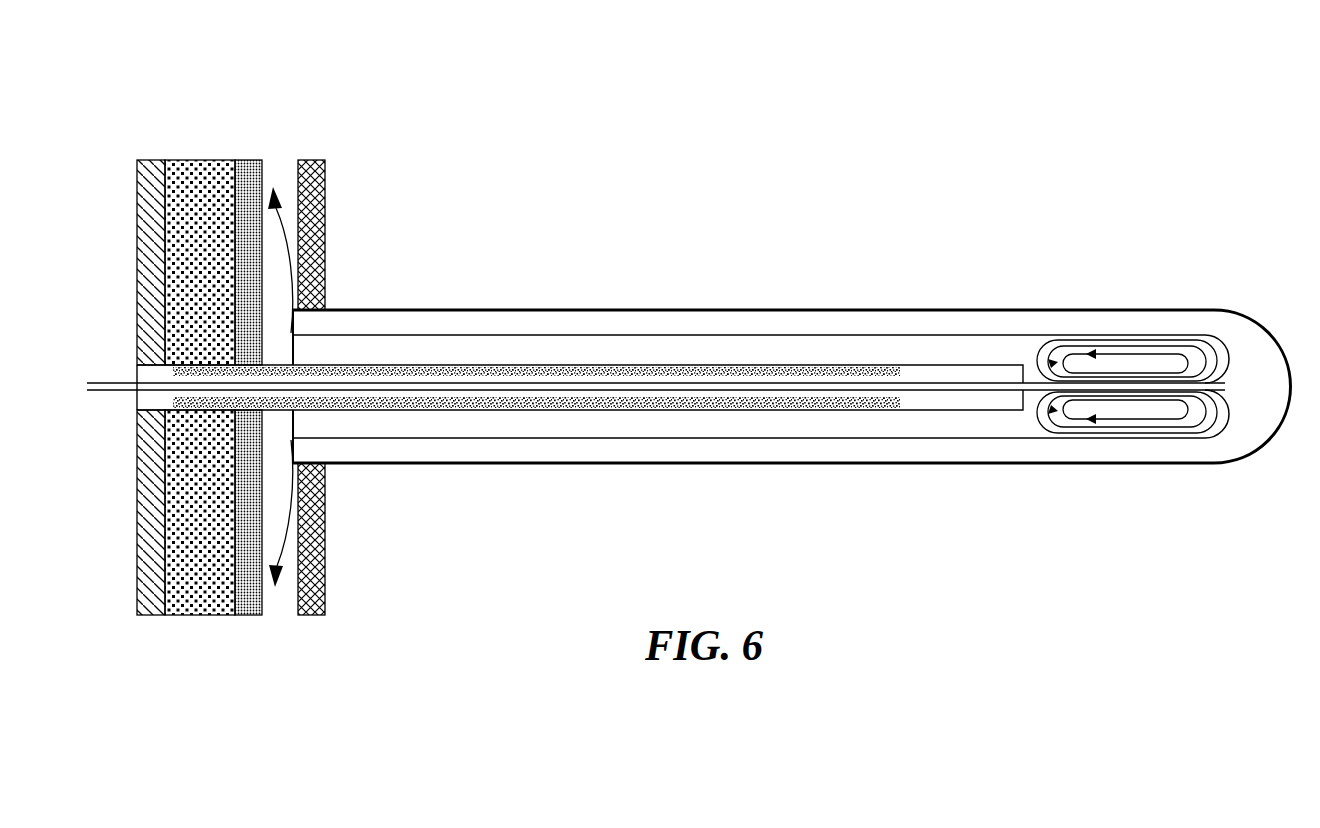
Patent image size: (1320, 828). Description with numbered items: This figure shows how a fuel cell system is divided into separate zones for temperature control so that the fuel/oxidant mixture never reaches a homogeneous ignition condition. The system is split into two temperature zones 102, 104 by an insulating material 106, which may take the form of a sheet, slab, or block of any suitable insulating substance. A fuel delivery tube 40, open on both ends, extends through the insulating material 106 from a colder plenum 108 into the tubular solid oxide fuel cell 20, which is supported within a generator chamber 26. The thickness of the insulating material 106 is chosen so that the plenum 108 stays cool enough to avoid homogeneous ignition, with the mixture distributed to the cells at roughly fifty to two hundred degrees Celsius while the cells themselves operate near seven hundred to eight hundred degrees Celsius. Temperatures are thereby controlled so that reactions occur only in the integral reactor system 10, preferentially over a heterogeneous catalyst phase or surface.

The temperature zone 102 is at (124, 135).
The temperature zone 104 is at (695, 210).
The insulating material 106 is at (215, 608).
The colder plenum 108 is at (83, 482).
The generator chamber 26 is at (436, 224).
The tube 40 is at (497, 363).
The integral reactor system 10 is at (1026, 354).
The tubular solid oxide fuel cell 20 is at (1037, 465).